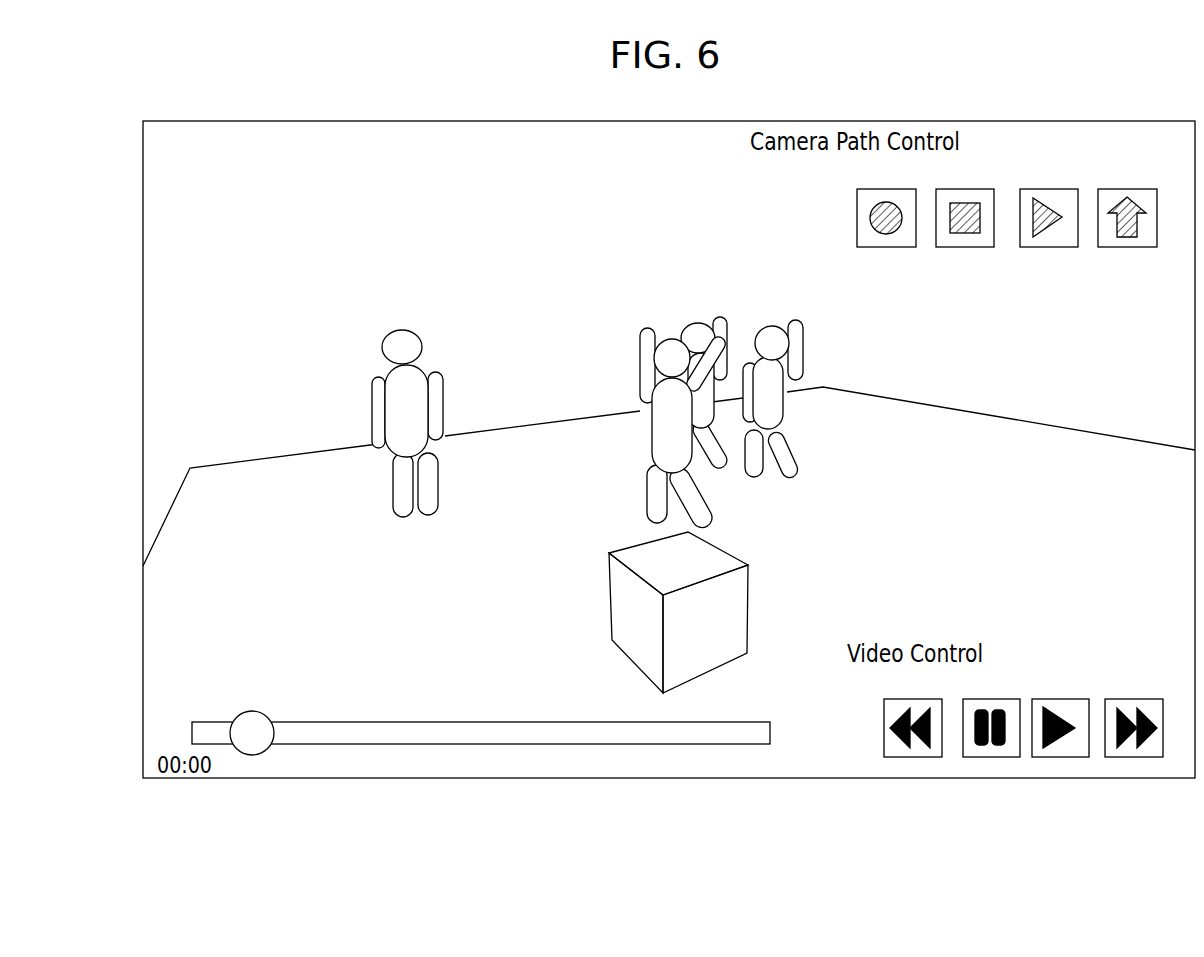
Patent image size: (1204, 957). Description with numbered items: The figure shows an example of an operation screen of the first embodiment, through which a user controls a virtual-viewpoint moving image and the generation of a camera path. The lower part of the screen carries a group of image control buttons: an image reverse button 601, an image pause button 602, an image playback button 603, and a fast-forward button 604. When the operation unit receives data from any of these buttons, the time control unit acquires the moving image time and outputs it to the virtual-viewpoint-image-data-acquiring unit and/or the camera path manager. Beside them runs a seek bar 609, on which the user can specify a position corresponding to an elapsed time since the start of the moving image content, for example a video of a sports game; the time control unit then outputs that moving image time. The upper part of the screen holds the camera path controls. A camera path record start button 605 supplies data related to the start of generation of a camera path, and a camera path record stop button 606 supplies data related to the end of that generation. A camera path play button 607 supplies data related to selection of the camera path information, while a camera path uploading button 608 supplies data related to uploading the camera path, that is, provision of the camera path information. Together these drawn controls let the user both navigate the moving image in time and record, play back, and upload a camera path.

The image reverse button 601 is at (913, 698).
The image pause button 602 is at (988, 698).
The image playback button 603 is at (1060, 698).
The fast-forward button 604 is at (1130, 698).
The camera path record start button 605 is at (878, 188).
The camera path record stop button 606 is at (958, 188).
The camera path play button 607 is at (1043, 188).
The camera path uploading button 608 is at (1120, 188).
The seek bar 609 is at (257, 711).